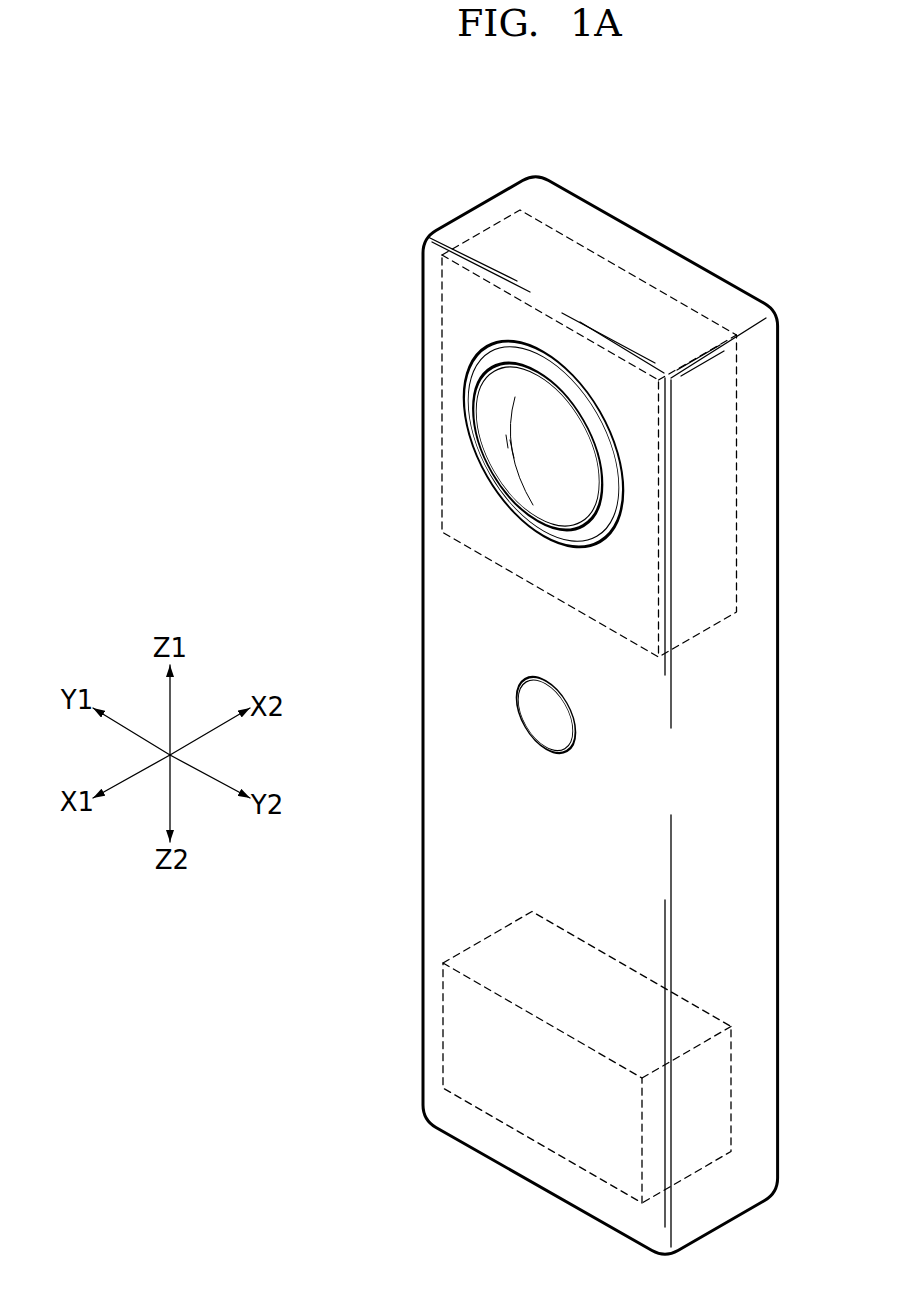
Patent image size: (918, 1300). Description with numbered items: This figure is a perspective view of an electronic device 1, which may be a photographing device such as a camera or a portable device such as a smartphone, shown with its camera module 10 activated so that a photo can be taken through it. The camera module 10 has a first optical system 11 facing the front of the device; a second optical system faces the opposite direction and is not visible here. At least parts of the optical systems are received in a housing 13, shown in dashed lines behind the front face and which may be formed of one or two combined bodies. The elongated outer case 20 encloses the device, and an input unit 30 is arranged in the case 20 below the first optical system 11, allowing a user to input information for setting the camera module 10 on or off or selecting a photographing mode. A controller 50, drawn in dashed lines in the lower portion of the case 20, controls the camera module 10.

The electronic device 1 is at (723, 213).
The camera module 10 is at (544, 433).
The first optical system 11 is at (497, 427).
The housing 13 is at (442, 302).
The case 20 is at (434, 851).
The input unit 30 is at (542, 714).
The controller 50 is at (443, 1032).